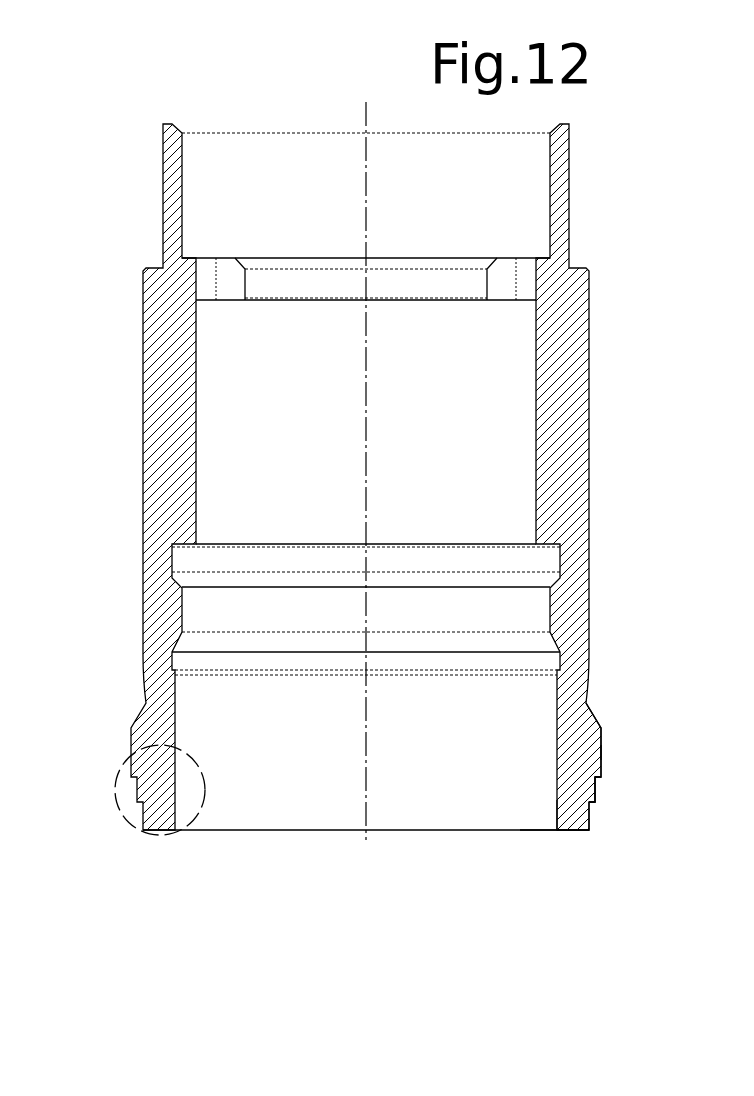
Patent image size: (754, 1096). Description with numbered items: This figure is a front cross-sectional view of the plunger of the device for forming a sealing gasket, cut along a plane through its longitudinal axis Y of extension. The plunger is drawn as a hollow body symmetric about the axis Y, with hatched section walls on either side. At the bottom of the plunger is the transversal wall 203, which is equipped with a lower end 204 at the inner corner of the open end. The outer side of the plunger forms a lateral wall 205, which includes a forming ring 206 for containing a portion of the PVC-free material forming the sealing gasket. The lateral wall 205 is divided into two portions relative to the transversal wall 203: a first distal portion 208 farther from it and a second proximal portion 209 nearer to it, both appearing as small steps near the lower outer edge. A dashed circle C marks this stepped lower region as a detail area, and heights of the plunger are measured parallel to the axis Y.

The transversal wall 203 is at (577, 829).
The lower end 204 is at (556, 832).
The lateral wall 205 is at (595, 789).
The forming ring 206 is at (604, 766).
The first distal portion 208 is at (598, 788).
The second proximal portion 209 is at (591, 817).
The detail region C is at (118, 814).
The longitudinal axis Y is at (366, 110).